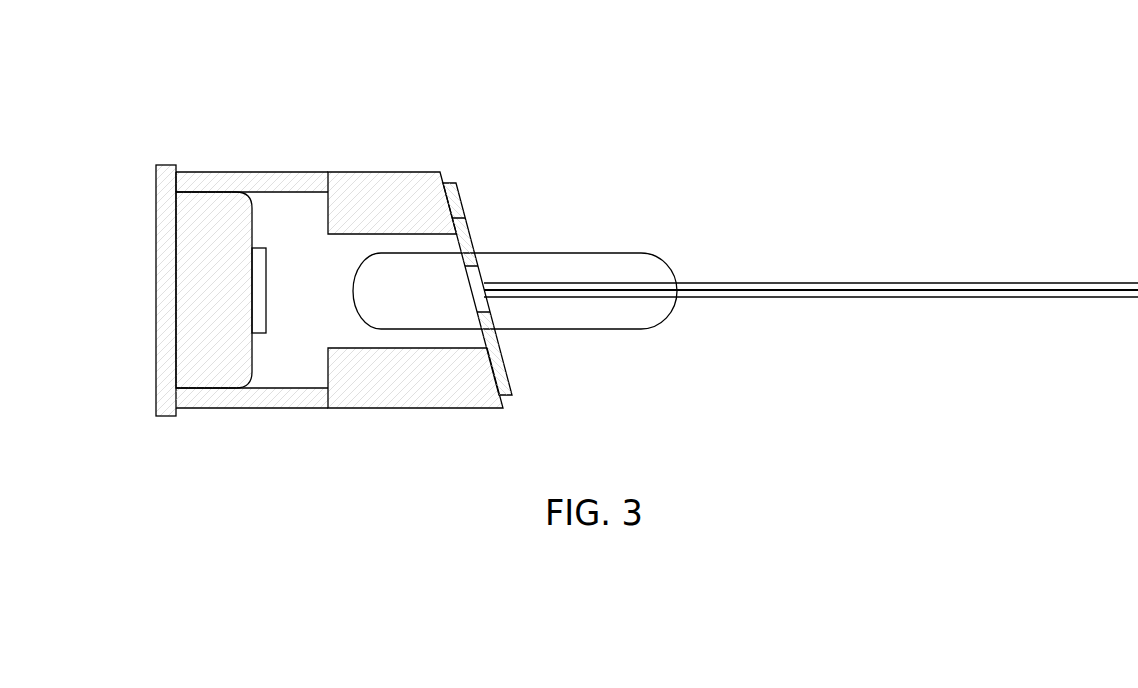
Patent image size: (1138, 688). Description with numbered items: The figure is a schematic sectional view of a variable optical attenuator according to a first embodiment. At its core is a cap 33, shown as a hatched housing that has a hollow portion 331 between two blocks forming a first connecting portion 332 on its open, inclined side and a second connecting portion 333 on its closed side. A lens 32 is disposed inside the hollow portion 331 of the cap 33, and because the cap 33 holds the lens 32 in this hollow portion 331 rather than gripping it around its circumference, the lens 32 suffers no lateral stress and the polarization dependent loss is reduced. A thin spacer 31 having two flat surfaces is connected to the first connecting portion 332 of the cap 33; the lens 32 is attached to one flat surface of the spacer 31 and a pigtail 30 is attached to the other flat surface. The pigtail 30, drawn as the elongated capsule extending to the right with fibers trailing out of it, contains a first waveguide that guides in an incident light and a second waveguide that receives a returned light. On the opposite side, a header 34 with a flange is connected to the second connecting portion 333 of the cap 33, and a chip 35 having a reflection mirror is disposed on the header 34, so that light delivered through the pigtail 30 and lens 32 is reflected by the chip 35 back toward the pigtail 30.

The pigtail 30 is at (613, 262).
The spacer 31 is at (460, 198).
The lens 32 is at (384, 311).
The cap 33 is at (329, 217).
The hollow portion 331 is at (285, 224).
The first connecting portion 332 is at (378, 205).
The second connecting portion 333 is at (199, 180).
The header 34 is at (200, 338).
The chip 35 is at (253, 287).